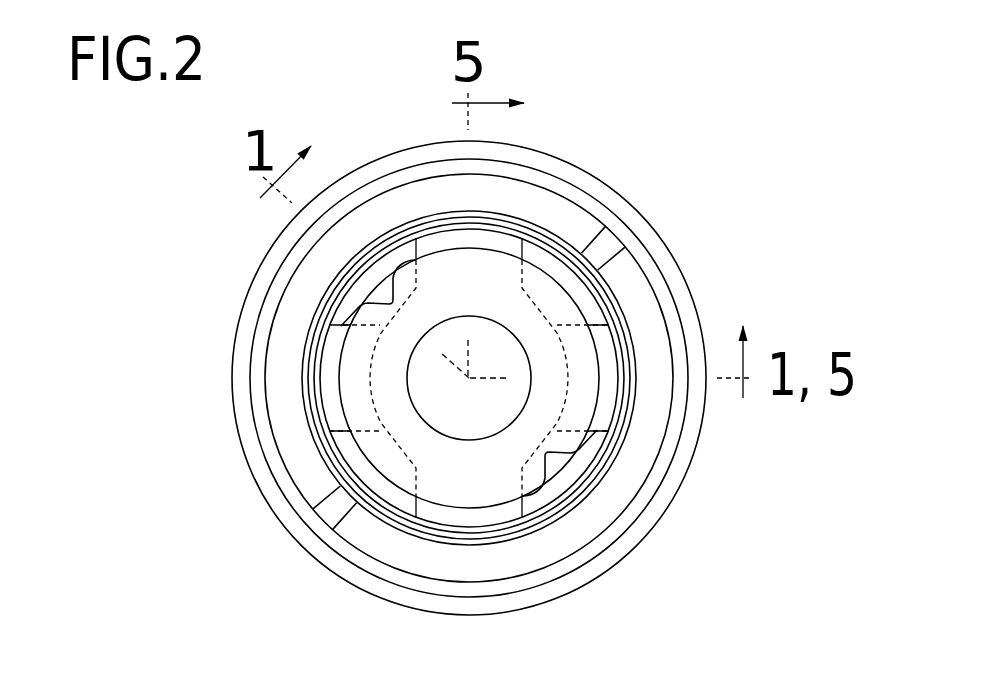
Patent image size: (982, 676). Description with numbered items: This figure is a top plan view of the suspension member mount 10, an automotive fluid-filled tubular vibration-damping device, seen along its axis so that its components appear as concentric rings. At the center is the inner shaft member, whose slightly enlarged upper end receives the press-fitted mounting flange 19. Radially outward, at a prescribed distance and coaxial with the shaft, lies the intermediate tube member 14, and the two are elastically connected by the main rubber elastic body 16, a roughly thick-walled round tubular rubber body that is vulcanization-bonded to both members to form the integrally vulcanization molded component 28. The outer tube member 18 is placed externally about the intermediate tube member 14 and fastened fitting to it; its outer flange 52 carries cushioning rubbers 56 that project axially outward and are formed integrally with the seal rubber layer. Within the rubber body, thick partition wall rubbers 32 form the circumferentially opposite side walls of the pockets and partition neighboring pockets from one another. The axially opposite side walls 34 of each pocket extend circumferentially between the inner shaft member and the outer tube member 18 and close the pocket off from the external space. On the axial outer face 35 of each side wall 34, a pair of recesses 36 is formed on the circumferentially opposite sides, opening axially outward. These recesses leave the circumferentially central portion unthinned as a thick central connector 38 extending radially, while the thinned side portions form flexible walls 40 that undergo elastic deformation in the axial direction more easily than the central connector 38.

The suspension member mount 10 is at (714, 164).
The intermediate tube member 14 is at (580, 506).
The main rubber elastic body 16 is at (339, 472).
The outer tube member 18 is at (230, 400).
The mounting flange 19 is at (467, 495).
The integrally vulcanization molded component 28 is at (469, 378).
The partition wall rubber 32 is at (330, 377).
The side wall 34 is at (455, 233).
The axial outer face 35 is at (487, 240).
The recess 36 is at (336, 331).
The central connector 38 is at (503, 242).
The flexible wall 40 is at (378, 277).
The outer flange 52 is at (693, 323).
The cushioning rubber 56 is at (285, 336).